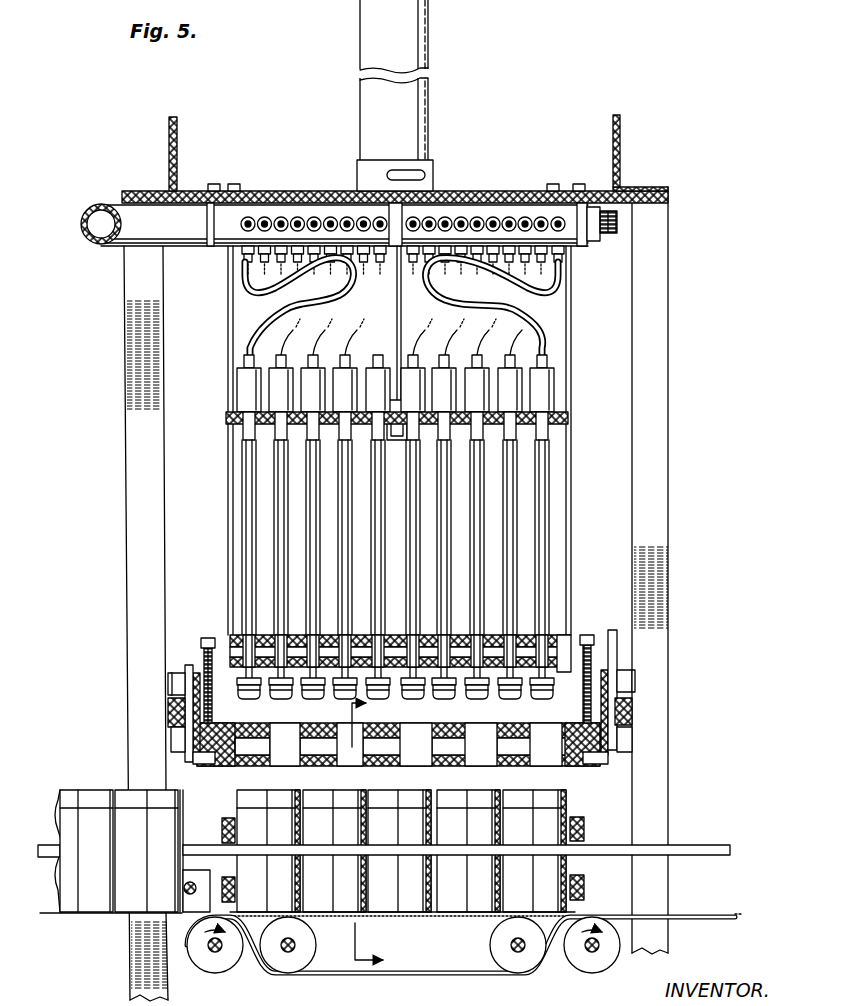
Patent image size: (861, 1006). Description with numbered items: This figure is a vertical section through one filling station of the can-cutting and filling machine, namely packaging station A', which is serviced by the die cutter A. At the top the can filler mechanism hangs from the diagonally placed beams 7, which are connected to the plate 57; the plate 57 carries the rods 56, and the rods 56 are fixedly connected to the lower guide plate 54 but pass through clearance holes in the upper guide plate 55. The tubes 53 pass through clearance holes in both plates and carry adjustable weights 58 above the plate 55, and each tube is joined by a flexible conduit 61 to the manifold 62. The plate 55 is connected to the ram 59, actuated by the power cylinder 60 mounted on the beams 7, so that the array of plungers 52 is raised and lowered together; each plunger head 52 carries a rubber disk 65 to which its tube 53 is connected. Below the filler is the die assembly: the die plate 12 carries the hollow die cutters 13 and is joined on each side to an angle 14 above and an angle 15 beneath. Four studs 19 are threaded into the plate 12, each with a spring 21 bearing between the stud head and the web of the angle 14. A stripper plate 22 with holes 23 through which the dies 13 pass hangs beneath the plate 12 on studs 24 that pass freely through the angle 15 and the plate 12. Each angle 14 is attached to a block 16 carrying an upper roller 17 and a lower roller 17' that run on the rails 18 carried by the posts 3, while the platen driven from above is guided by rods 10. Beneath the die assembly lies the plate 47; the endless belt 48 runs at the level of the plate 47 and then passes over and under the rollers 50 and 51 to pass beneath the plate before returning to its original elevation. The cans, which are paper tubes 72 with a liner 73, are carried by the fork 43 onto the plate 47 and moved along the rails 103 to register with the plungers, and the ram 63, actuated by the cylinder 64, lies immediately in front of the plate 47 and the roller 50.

The posts 3 is at (126, 499).
The beams 7 is at (177, 150).
The rods 10 is at (374, 831).
The die plate 12 is at (398, 745).
The die cutters 13 is at (288, 760).
The angle 14 is at (177, 680).
The angle 15 is at (196, 762).
The block 16 is at (188, 758).
The upper roller 17 is at (394, 665).
The lower roller 17' is at (396, 739).
The rails 18 is at (172, 712).
The studs 19 is at (204, 640).
The spring 21 is at (197, 673).
The stripper plate 22 is at (250, 762).
The holes 23 is at (372, 766).
The studs 24 is at (228, 766).
The fork 43 is at (222, 830).
The plate 47 is at (416, 916).
The endless belt 48 is at (718, 912).
The roller 50 is at (213, 972).
The roller 51 is at (300, 970).
The plungers 52 is at (239, 700).
The tubes 53 is at (253, 552).
The guide plate 54 is at (226, 636).
The guide plate 55 is at (230, 422).
The rods 56 is at (393, 546).
The plate 57 is at (470, 191).
The adjustable weights 58 is at (279, 397).
The ram 59 is at (405, 352).
The power cylinder 60 is at (412, 104).
The flexible conduit 61 is at (248, 333).
The manifold 62 is at (197, 243).
The ram 63 is at (184, 889).
The cylinder 64 is at (177, 876).
The rubber disk 65 is at (385, 700).
The paper tubes 72 is at (99, 834).
The liner 73 is at (115, 790).
The rails 103 is at (688, 843).
The die cutter A is at (405, 807).
The packaging station A' is at (703, 373).